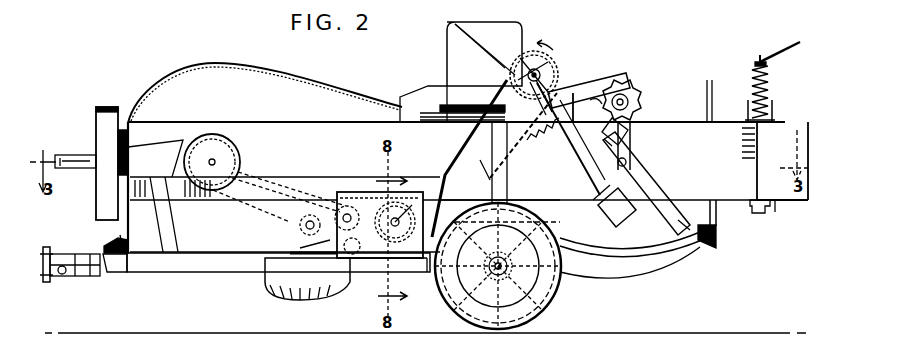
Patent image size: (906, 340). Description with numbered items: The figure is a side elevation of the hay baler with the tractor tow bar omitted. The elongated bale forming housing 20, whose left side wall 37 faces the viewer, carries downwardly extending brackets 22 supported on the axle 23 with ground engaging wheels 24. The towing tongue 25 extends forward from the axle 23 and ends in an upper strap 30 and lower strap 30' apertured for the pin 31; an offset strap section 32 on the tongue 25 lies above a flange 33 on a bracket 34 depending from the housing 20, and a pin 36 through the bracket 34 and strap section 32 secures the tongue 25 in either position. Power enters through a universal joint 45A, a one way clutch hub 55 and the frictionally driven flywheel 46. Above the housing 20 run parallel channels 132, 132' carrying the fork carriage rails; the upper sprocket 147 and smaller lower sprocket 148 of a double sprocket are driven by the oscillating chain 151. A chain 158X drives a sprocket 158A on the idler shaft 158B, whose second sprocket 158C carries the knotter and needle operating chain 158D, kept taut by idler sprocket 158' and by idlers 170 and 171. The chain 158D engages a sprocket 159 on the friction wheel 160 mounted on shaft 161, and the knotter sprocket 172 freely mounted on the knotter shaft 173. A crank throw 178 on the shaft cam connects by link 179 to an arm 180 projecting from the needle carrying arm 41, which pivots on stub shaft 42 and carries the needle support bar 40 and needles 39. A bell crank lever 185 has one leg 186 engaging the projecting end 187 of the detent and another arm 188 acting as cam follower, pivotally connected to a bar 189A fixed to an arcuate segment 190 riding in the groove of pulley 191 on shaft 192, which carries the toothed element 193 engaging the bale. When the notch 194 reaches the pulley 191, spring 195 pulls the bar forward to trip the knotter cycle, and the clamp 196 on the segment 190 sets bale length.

The bale forming housing 20 is at (286, 118).
The bracket 22 is at (540, 234).
The axle 23 is at (496, 275).
The ground engaging wheel 24 is at (560, 296).
The towing tongue 25 is at (238, 274).
The upper strap 30 is at (71, 251).
The lower strap 30' is at (70, 283).
The pin 31 is at (44, 282).
The offset strap section 32 is at (110, 248).
The flange 33 is at (125, 274).
The bracket 34 is at (196, 234).
The pin 36 is at (122, 246).
The left side wall 37 is at (736, 200).
The needle 39 is at (650, 262).
The needle support bar 40 is at (694, 242).
The arm 41 is at (676, 213).
The stub shaft 42 is at (638, 162).
The universal joint 45A is at (58, 160).
The flywheel 46 is at (108, 105).
The one way clutch hub 55 is at (78, 154).
The channel 132 is at (489, 162).
The channel 132' is at (477, 166).
The upper sprocket 147 is at (466, 98).
The lower sprocket 148 is at (452, 124).
The chain 151 is at (428, 92).
The idler sprocket 158' is at (291, 227).
The sprocket 158A is at (330, 200).
The idler shaft 158B is at (458, 158).
The second sprocket 158C is at (311, 241).
The knotter and needle operating chain 158D is at (313, 261).
The chain 158X is at (240, 204).
The sprocket 159 is at (355, 200).
The wheel 160 is at (390, 200).
The shaft 161 is at (414, 203).
The idler 170 is at (355, 266).
The idler 171 is at (412, 264).
The knotter sprocket 172 is at (545, 68).
The knotter shaft 173 is at (557, 46).
The crank throw 178 is at (550, 82).
The link 179 is at (595, 202).
The arm 180 is at (640, 212).
The bell crank lever 185 is at (532, 128).
The leg 186 is at (512, 148).
The projecting end 187 is at (508, 72).
The arm 188 is at (608, 125).
The bar 189A is at (612, 75).
The arcuate segment 190 is at (644, 104).
The pulley 191 is at (630, 130).
The shaft 192 is at (642, 96).
The toothed element 193 is at (628, 76).
The notch 194 is at (628, 163).
The spring 195 is at (538, 140).
The clamp 196 is at (636, 88).